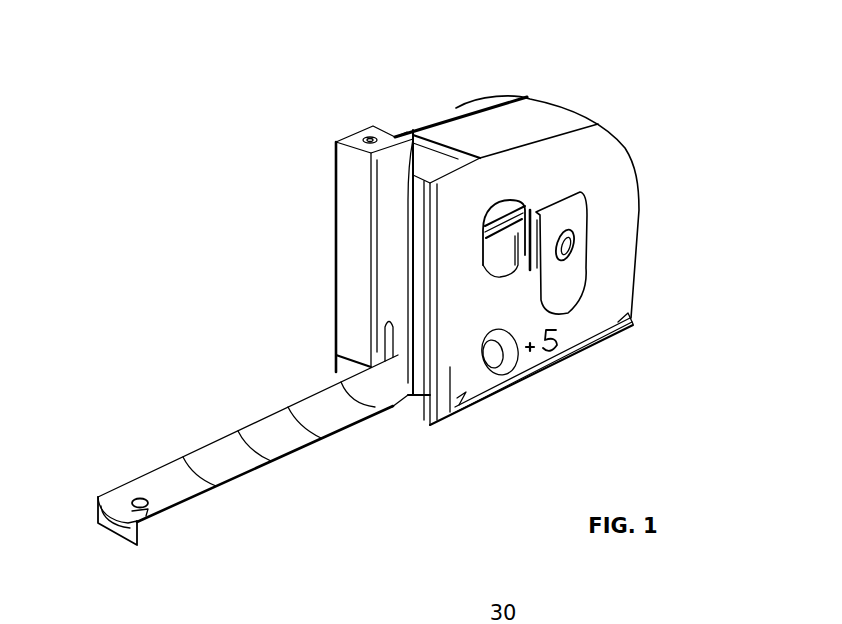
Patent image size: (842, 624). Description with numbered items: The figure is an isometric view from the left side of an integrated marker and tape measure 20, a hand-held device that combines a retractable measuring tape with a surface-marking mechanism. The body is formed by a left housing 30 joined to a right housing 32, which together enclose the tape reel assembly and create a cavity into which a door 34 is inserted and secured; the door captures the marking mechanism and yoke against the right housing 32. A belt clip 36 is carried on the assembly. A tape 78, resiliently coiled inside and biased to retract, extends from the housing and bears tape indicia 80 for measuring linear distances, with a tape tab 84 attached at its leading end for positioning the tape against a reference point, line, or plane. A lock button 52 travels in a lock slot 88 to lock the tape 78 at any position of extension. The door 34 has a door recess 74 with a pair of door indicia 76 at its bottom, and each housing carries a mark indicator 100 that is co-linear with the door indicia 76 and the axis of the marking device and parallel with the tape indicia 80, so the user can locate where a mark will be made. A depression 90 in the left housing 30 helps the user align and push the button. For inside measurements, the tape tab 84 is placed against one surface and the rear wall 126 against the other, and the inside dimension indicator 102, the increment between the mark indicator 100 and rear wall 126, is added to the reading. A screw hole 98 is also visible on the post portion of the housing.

The integrated marker and tape measure 20 is at (532, 88).
The left housing 30 is at (620, 270).
The right housing 32 is at (480, 118).
The door 34 is at (355, 222).
The belt clip 36 is at (580, 195).
The lock button 52 is at (508, 227).
The door recess 74 is at (388, 282).
The door indicia 76 is at (395, 388).
The tape 78 is at (167, 498).
The tape indicia 80 is at (250, 460).
The tape tab 84 is at (127, 547).
The lock slot 88 is at (545, 336).
The depression 90 is at (522, 363).
The screw hole 98 is at (358, 136).
The mark indicator 100 is at (450, 410).
The inside dimension indicator 102 is at (598, 352).
The rear wall 126 is at (638, 237).